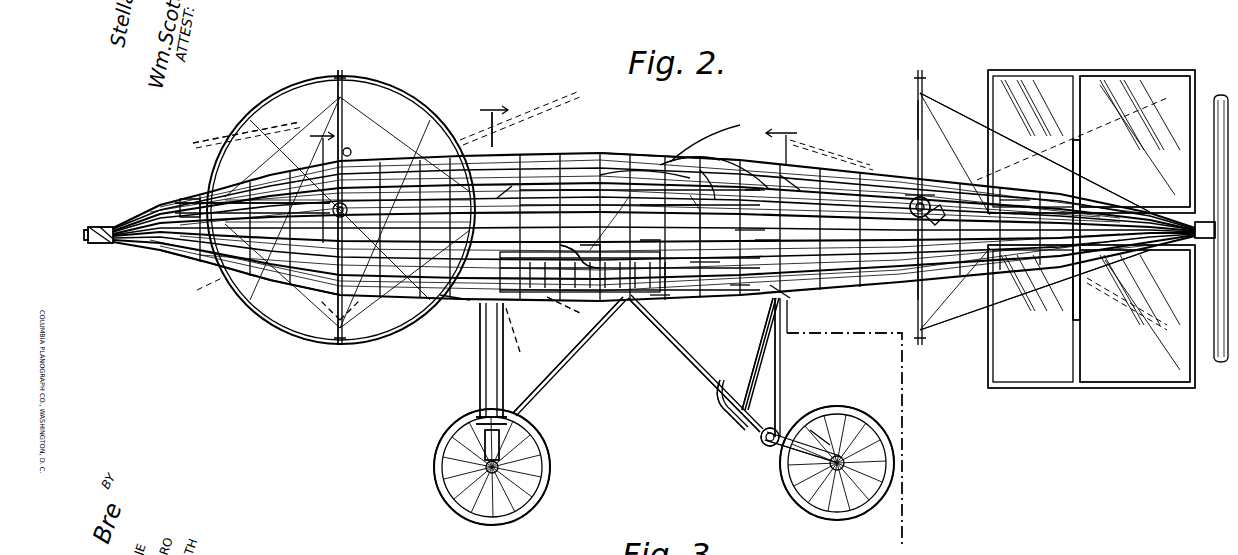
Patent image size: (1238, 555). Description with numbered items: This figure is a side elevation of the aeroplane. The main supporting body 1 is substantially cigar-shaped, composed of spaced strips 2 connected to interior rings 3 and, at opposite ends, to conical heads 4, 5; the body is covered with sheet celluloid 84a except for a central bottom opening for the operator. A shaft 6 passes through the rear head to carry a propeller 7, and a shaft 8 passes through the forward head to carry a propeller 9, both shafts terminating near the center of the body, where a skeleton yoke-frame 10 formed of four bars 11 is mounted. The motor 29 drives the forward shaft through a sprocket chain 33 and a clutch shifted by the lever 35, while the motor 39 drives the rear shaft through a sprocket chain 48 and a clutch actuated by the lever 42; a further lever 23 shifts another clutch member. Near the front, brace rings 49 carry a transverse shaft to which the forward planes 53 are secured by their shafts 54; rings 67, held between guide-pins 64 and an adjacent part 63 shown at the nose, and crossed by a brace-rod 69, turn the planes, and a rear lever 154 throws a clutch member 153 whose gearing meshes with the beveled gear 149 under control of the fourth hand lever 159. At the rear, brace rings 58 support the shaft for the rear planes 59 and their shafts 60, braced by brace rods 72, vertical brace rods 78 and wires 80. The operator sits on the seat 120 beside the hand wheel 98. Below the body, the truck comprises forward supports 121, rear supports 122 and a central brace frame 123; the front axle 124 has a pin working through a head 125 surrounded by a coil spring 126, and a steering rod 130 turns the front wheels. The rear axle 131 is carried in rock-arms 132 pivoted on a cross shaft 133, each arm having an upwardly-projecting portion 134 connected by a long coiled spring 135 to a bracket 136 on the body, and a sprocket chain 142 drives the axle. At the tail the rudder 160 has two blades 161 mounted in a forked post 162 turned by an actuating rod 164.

The main supporting body 1 is at (670, 147).
The strips 2 is at (715, 192).
The rings 3 is at (673, 158).
The conical head 4 is at (138, 247).
The conical head 5 is at (1188, 214).
The shaft 6 is at (1213, 228).
The propeller 7 is at (1222, 362).
The shaft 8 is at (100, 244).
The propeller 9 is at (92, 240).
The skeleton yoke-frame 10 is at (697, 268).
The bars 11 is at (570, 255).
The lever 23 is at (645, 199).
The motor 29 is at (553, 300).
The sprocket chain 33 is at (590, 248).
The lever 35 is at (578, 201).
The motor 39 is at (660, 304).
The lever 42 is at (672, 162).
The sprocket chain 48 is at (656, 250).
The brace rings 49 is at (308, 290).
The forward planes 53 is at (233, 192).
The transverse shaft 54 is at (268, 282).
The brace rings 58 is at (923, 196).
The rear planes 59 is at (1008, 206).
The shaft 60 is at (915, 245).
The forward shaft 63 is at (177, 213).
The guide-pins 64 is at (192, 260).
The rings 67 is at (394, 92).
The brace-rod 69 is at (350, 151).
The brace rods 72 is at (910, 200).
The brace rods 78 is at (916, 130).
The wires 80 is at (996, 280).
The sheet celluloid 84a is at (808, 186).
The hand wheel 98 is at (453, 308).
The seat 120 is at (522, 240).
The forward supports 121 is at (480, 358).
The rear supports 122 is at (780, 360).
The central brace frame 123 is at (688, 350).
The front axle 124 is at (478, 477).
The head 125 is at (478, 417).
The coil spring 126 is at (482, 447).
The steering rod 130 is at (505, 381).
The rear axle 131 is at (860, 472).
The rock-arms 132 is at (810, 451).
The cross shaft 133 is at (762, 436).
The upwardly-projecting portion 134 is at (724, 405).
The coiled spring 135 is at (763, 350).
The bracket 136 is at (783, 293).
The sprocket chain 142 is at (827, 430).
The beveled gear 149 is at (757, 240).
The clutch member 153 is at (752, 218).
The lever 154 is at (748, 197).
The fourth hand lever 159 is at (500, 196).
The rudder 160 is at (1106, 400).
The blades 161 is at (1172, 345).
The forked post 162 is at (1086, 270).
The actuating rod 164 is at (738, 290).